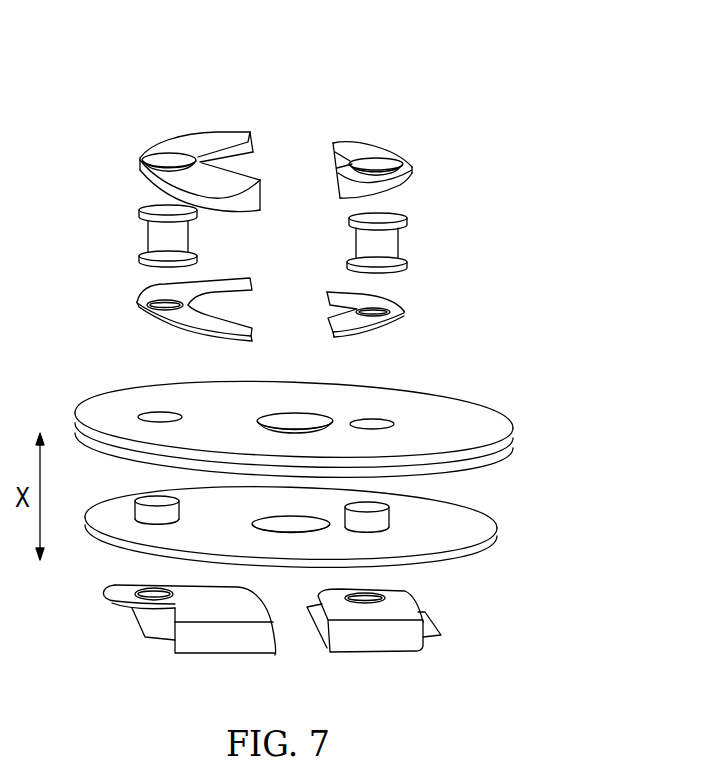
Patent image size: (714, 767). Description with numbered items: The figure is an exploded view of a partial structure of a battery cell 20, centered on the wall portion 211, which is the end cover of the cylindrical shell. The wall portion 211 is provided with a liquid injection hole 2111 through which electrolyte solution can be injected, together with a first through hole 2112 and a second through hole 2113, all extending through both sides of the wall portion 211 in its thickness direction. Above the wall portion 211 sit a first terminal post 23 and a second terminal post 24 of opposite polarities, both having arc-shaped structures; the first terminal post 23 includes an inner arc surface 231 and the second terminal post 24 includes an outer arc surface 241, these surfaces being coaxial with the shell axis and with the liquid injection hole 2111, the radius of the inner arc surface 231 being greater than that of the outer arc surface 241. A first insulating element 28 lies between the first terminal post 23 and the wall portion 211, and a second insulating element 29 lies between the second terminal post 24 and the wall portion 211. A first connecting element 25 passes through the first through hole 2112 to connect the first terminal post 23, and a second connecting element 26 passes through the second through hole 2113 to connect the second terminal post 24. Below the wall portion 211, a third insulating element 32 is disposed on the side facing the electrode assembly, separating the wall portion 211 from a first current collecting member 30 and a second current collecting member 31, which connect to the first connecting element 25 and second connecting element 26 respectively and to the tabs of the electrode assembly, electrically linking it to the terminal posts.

The battery cell 20 is at (292, 39).
The first terminal post 23 is at (173, 148).
The inner arc surface 231 is at (201, 158).
The second terminal post 24 is at (396, 142).
The outer arc surface 241 is at (408, 170).
The first connecting element 25 is at (162, 233).
The second connecting element 26 is at (385, 248).
The first insulating element 28 is at (137, 303).
The second insulating element 29 is at (400, 312).
The wall portion 211 is at (315, 409).
The liquid injection hole 2111 is at (294, 416).
The first through hole 2112 is at (158, 414).
The second through hole 2113 is at (384, 418).
The third insulating element 32 is at (483, 527).
The first current collecting member 30 is at (240, 645).
The second current collecting member 31 is at (390, 642).